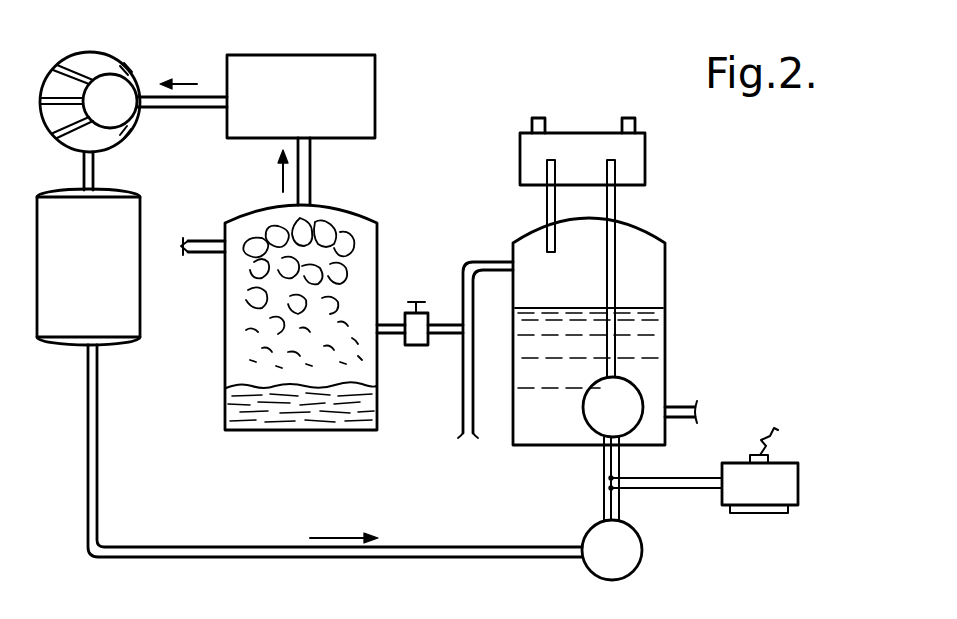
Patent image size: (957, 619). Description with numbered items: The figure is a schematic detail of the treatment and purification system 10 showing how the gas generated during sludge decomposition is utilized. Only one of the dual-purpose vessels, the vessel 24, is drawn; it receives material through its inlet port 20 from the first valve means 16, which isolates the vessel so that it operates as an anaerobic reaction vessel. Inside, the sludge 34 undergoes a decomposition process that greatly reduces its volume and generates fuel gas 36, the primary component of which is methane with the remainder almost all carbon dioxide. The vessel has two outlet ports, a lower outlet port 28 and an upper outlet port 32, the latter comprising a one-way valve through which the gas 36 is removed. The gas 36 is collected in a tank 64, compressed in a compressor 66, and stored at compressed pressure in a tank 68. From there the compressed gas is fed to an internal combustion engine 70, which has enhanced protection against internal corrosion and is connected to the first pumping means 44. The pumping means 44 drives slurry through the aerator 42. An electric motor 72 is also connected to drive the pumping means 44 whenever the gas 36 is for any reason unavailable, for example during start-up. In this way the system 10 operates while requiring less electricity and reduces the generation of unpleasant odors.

The treatment and purification system 10 is at (740, 269).
The first valve means 16 is at (422, 348).
The inlet port 20 is at (205, 258).
The dual-purpose vessel 24 is at (225, 366).
The outlet port 28 is at (400, 320).
The upper outlet port 32 is at (312, 172).
The sludge 34 is at (240, 407).
The fuel gas 36 is at (340, 240).
The aerator 42 is at (575, 135).
The first pumping means 44 is at (632, 403).
The tank 64 is at (350, 80).
The compressor 66 is at (132, 82).
The tank 68 is at (133, 232).
The internal combustion engine 70 is at (632, 552).
The electric motor 72 is at (780, 470).